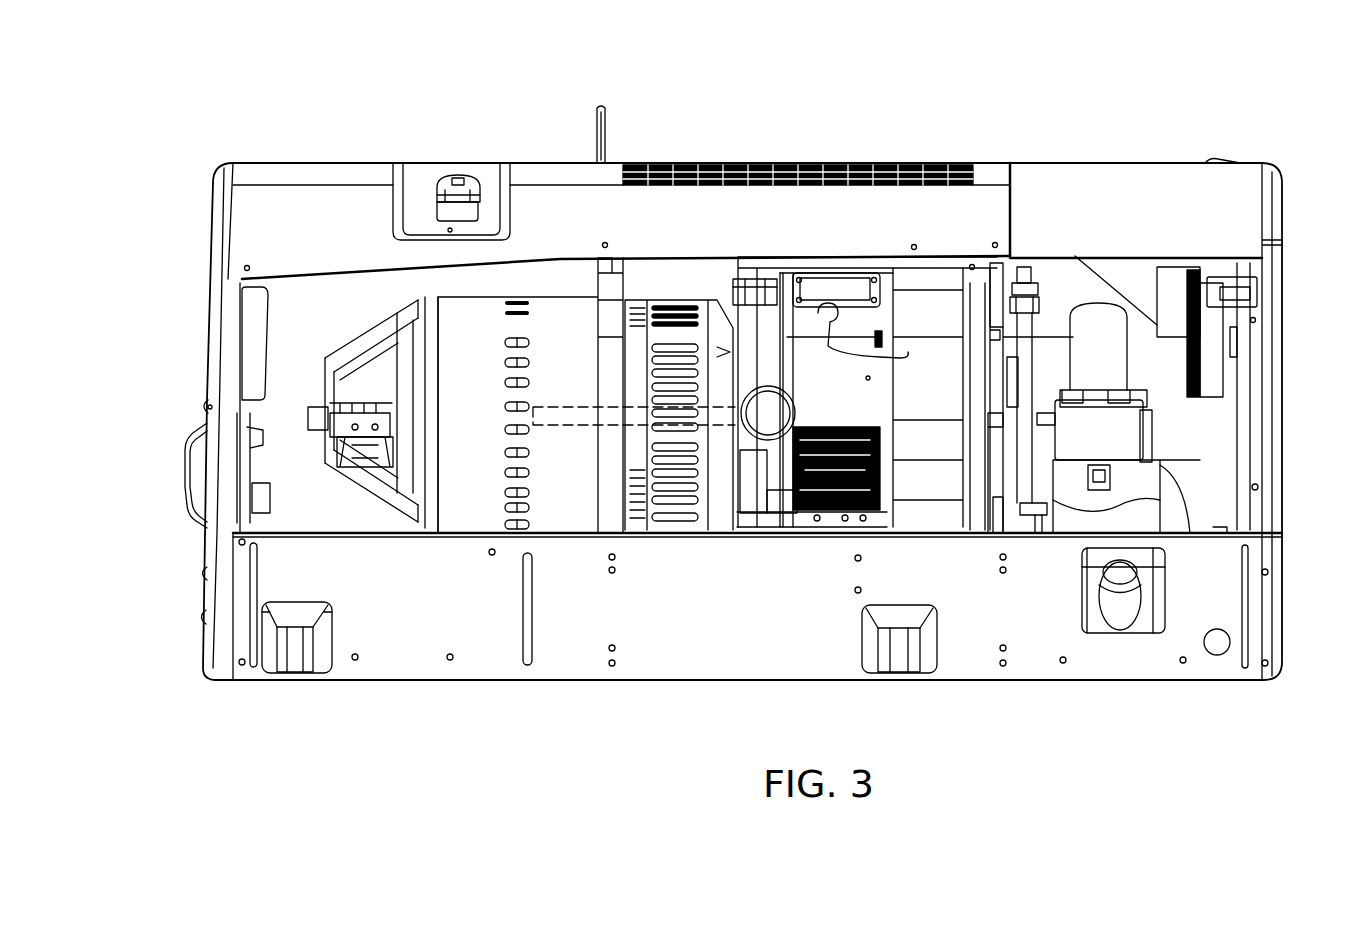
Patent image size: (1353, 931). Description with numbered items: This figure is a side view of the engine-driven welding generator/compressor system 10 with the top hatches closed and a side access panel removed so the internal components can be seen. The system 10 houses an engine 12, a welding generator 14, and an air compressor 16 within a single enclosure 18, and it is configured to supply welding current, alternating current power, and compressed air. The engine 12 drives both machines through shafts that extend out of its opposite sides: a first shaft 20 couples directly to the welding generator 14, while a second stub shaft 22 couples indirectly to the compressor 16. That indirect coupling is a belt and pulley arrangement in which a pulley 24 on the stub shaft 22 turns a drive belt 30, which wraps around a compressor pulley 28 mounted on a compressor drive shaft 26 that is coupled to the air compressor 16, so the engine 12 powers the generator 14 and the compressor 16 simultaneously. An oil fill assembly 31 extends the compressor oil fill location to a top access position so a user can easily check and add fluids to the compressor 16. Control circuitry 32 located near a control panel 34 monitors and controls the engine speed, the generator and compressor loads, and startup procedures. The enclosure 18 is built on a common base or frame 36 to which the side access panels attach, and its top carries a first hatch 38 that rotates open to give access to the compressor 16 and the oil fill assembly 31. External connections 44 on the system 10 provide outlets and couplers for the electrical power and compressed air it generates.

The engine-driven welding generator/compressor system 10 is at (1138, 104).
The engine 12 is at (924, 283).
The welding generator 14 is at (557, 318).
The air compressor 16 is at (1163, 474).
The enclosure 18 is at (365, 138).
The first shaft 20 is at (567, 427).
The second shaft 22 is at (1048, 415).
The pulley 24 is at (1035, 400).
The compressor drive shaft 26 is at (1042, 533).
The compressor pulley 28 is at (997, 517).
The drive belt 30 is at (1012, 480).
The oil fill assembly 31 is at (1050, 302).
The control circuitry 32 is at (276, 306).
The control panel 34 is at (215, 210).
The common base or frame 36 is at (388, 535).
The first access panel or hatch 38 is at (1063, 163).
The external connections 44 is at (176, 458).